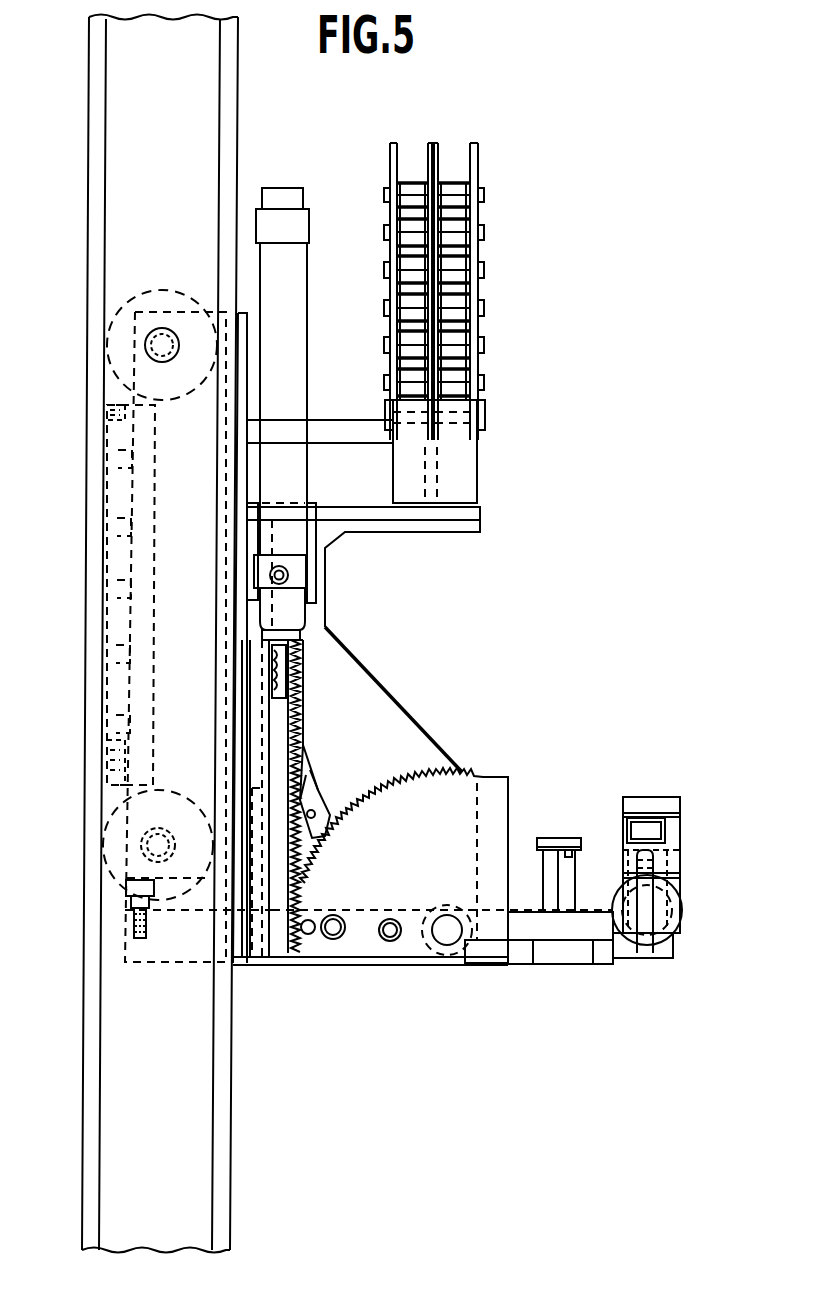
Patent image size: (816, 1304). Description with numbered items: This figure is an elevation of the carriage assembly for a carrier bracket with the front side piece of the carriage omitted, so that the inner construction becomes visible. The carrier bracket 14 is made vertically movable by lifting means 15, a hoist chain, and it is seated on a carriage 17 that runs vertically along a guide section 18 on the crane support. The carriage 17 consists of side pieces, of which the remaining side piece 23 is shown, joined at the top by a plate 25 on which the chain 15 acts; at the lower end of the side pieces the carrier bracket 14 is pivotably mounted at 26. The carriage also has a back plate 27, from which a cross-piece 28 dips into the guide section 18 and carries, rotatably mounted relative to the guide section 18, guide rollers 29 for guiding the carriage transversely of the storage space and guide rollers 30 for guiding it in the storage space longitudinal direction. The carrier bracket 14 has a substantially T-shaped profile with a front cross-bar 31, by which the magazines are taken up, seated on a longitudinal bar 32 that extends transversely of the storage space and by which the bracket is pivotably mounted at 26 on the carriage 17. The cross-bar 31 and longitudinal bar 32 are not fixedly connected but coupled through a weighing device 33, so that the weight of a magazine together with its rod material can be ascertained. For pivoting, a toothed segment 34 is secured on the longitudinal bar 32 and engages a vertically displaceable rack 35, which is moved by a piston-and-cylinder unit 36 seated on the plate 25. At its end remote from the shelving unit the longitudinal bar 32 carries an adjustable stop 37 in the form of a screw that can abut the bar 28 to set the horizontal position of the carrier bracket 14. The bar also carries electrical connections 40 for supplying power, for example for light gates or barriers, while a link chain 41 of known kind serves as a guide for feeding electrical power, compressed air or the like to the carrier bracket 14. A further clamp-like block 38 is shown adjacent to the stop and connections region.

The carrier bracket 14 is at (525, 837).
The lifting means 15 is at (453, 172).
The carriage 17 is at (250, 988).
The guide section 18 is at (122, 86).
The side piece 23 is at (360, 688).
The plate 25 is at (470, 515).
The pivot mounting 26 is at (449, 945).
The back plate 27 is at (240, 340).
The cross-piece 28 is at (157, 488).
The guide rollers 29 is at (130, 300).
The guide rollers 30 is at (110, 407).
The front cross-bar 31 is at (672, 832).
The longitudinal bar 32 is at (668, 950).
The weighing device 33 is at (676, 906).
The toothed segment 34 is at (428, 800).
The rack 35 is at (282, 960).
The piston-and-cylinder unit 36 is at (284, 192).
The adjustable stop 37 is at (128, 890).
The clamp block 38 is at (655, 797).
The electrical connections 40 is at (562, 838).
The link chain 41 is at (312, 792).